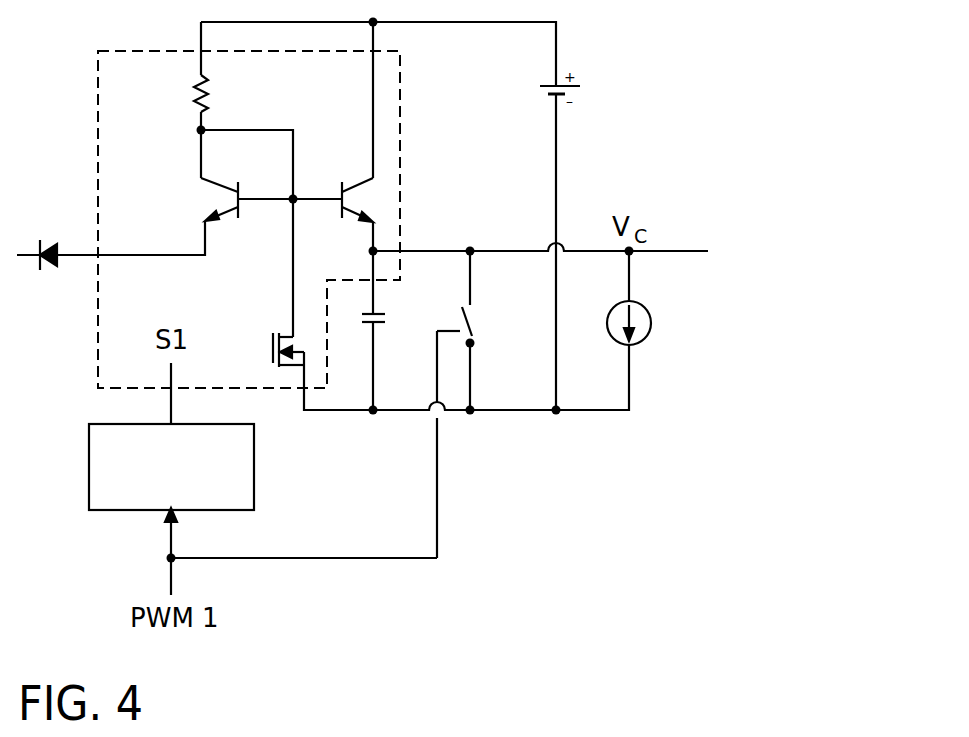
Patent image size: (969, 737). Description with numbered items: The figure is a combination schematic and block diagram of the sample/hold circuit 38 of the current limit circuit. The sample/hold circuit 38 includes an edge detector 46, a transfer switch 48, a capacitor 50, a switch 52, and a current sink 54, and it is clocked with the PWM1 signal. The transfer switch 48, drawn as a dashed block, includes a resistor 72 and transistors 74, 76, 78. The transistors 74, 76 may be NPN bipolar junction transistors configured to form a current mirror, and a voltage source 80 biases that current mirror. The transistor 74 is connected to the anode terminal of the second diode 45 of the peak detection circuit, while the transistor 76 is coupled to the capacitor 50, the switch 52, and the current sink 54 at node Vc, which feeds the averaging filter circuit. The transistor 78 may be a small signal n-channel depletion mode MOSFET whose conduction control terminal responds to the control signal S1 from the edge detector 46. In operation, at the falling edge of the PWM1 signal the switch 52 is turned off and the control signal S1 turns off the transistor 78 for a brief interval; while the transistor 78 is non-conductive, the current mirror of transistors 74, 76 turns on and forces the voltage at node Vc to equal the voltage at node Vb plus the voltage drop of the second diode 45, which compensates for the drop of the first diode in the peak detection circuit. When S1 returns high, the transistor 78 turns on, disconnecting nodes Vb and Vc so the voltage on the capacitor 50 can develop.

The sample/hold circuit 38 is at (789, 251).
The second diode 45 is at (50, 262).
The edge detector 46 is at (254, 471).
The transfer switch 48 is at (400, 96).
The capacitor 50 is at (383, 313).
The switch 52 is at (475, 326).
The current sink 54 is at (651, 318).
The resistor 72 is at (209, 90).
The transistor 74 is at (227, 218).
The transistor 76 is at (353, 200).
The transistor 78 is at (271, 336).
The voltage source 80 is at (582, 95).